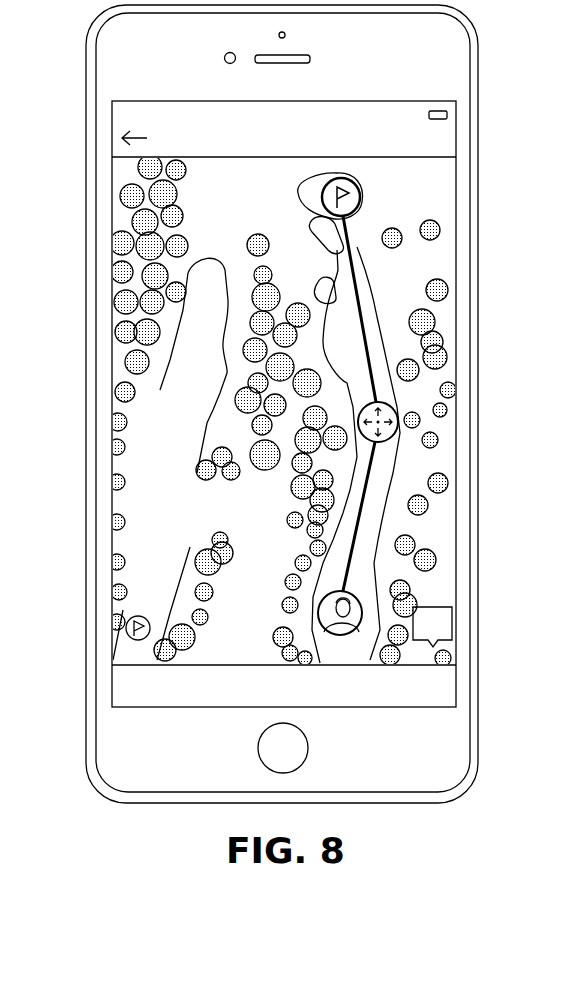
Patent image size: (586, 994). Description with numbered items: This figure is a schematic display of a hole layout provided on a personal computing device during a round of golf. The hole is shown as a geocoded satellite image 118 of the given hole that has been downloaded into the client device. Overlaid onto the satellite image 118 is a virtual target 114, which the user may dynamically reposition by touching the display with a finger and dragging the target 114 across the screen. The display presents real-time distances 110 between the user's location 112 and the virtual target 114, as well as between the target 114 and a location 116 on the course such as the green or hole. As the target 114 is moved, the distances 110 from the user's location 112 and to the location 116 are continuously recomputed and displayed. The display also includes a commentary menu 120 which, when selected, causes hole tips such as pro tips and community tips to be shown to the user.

The geocoded satellite image 118 is at (493, 212).
The real-time distances 110 is at (407, 283).
The location on the course 116 is at (360, 200).
The virtual target 114 is at (400, 403).
The user's location 112 is at (353, 636).
The commentary menu 120 is at (423, 607).